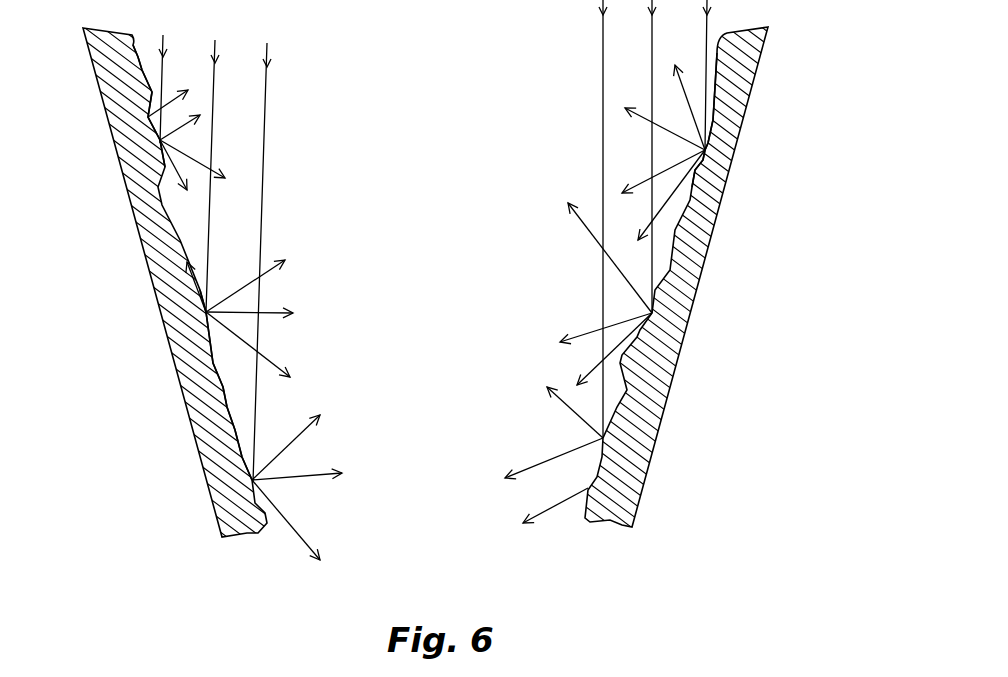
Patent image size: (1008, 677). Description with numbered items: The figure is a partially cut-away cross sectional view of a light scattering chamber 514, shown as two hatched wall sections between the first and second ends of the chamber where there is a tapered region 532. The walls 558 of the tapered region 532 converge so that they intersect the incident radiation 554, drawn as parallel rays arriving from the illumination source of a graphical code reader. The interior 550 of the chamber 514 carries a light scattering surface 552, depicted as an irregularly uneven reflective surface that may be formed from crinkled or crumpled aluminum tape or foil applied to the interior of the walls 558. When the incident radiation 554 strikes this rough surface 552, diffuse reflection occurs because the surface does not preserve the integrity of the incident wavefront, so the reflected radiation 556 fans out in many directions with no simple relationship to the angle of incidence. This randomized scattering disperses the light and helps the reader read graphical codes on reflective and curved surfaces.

The light scattering chamber 514 is at (780, 365).
The tapered region 532 is at (157, 310).
The interior of the chamber 550 is at (235, 417).
The light scattering surface 552 is at (650, 407).
The incident radiation 554 is at (267, 107).
The reflected radiation 556 is at (263, 273).
The walls of the light scattering chamber 558 is at (118, 130).